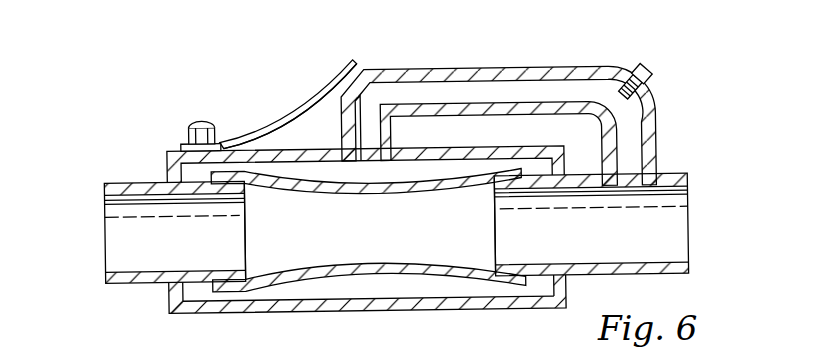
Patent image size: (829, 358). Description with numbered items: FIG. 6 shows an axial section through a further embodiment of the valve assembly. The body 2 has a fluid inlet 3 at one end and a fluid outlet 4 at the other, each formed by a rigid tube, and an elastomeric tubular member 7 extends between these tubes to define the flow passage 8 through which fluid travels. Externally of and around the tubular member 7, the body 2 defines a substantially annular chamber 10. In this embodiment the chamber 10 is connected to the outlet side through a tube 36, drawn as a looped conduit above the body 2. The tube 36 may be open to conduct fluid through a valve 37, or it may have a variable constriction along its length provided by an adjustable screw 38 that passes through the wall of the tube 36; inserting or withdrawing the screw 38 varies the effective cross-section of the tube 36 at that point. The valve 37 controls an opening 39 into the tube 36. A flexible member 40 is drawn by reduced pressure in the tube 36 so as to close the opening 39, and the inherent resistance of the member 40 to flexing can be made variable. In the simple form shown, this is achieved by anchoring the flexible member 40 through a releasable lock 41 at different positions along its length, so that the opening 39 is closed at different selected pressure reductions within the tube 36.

The body 2 is at (222, 312).
The fluid inlet 3 is at (115, 250).
The fluid outlet 4 is at (672, 240).
The tubular member 7 is at (423, 277).
The flow passage 8 is at (295, 247).
The annular chamber 10 is at (343, 287).
The tube 36 is at (447, 68).
The valve 37 is at (188, 116).
The adjustable screw 38 is at (655, 84).
The opening 39 is at (348, 65).
The flexible member 40 is at (305, 102).
The releasable lock 41 is at (182, 144).